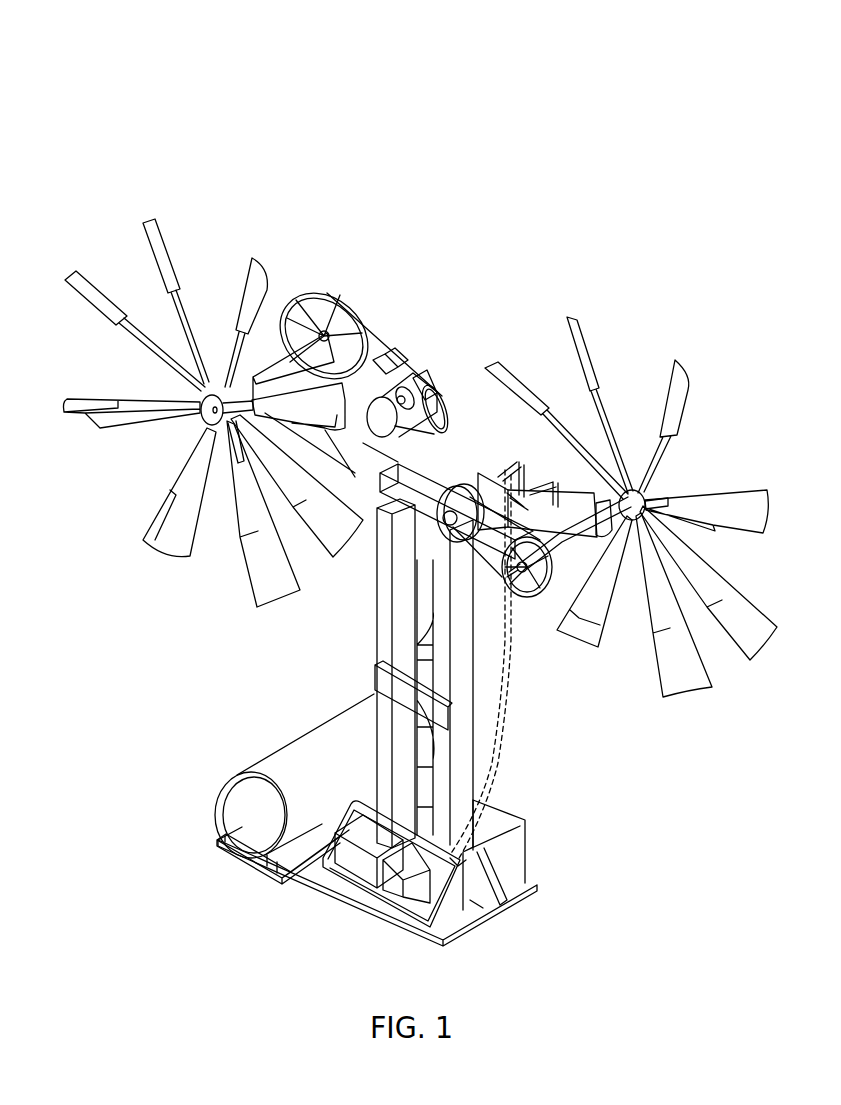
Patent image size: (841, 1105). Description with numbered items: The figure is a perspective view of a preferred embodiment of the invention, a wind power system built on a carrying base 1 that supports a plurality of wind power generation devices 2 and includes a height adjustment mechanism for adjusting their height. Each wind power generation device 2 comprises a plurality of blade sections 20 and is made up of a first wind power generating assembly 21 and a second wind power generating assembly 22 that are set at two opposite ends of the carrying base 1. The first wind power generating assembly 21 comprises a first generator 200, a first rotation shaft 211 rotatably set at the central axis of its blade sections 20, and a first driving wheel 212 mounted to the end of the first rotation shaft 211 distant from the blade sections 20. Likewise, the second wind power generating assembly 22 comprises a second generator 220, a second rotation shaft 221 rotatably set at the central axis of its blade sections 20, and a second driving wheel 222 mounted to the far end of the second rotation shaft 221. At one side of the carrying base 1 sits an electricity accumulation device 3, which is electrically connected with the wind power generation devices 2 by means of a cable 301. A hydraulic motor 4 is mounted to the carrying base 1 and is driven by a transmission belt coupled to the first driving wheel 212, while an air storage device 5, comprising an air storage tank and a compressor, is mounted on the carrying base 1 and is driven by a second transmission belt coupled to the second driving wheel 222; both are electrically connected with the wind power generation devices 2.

The carrying base 1 is at (473, 767).
The wind power generation devices 2 is at (602, 92).
The electricity accumulation device 3 is at (373, 867).
The hydraulic motor 4 is at (490, 460).
The air storage device 5 is at (387, 320).
The blade sections 20 is at (93, 283).
The first wind power generating assembly 21 is at (687, 160).
The second wind power generating assembly 22 is at (315, 160).
The first generator 200 is at (495, 463).
The first rotation shaft 211 is at (617, 490).
The first driving wheel 212 is at (545, 500).
The second generator 220 is at (377, 417).
The second rotation shaft 221 is at (232, 385).
The second driving wheel 222 is at (311, 288).
The cable 301 is at (507, 672).